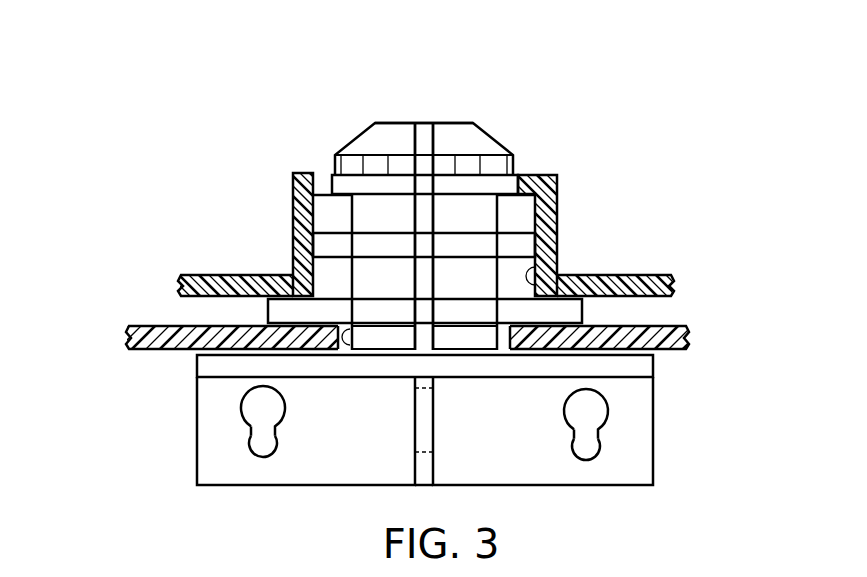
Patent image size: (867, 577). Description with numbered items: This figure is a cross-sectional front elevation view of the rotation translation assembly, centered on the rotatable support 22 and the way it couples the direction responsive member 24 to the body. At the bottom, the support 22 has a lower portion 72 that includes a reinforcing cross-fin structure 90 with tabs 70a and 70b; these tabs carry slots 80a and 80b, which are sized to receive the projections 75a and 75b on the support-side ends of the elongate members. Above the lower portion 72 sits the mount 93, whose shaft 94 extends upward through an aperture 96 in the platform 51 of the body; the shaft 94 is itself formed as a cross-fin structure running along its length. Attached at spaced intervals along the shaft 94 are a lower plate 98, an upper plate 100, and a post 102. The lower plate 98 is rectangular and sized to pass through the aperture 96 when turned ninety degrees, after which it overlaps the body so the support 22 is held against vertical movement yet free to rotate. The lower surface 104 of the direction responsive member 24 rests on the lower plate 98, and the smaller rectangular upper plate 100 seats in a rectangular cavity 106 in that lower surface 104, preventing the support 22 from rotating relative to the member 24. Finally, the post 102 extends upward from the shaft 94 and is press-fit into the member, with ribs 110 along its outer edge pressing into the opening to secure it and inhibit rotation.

The rotatable support 22 is at (447, 97).
The direction responsive member 24 is at (643, 273).
The platform 51 is at (672, 350).
The tab 70a is at (653, 420).
The tab 70b is at (195, 410).
The lower portion 72 is at (195, 450).
The projection 75a is at (260, 457).
The projection 75b is at (587, 460).
The slot 80a is at (253, 412).
The slot 80b is at (595, 413).
The reinforcing cross-fin structure 90 is at (195, 363).
The mount 93 is at (483, 125).
The shaft 94 is at (497, 217).
The aperture 96 is at (335, 327).
The lower plate 98 is at (267, 309).
The upper plate 100 is at (293, 177).
The post 102 is at (397, 123).
The lower surface 104 is at (213, 297).
The cavity 106 is at (530, 270).
The ribs 110 is at (373, 163).